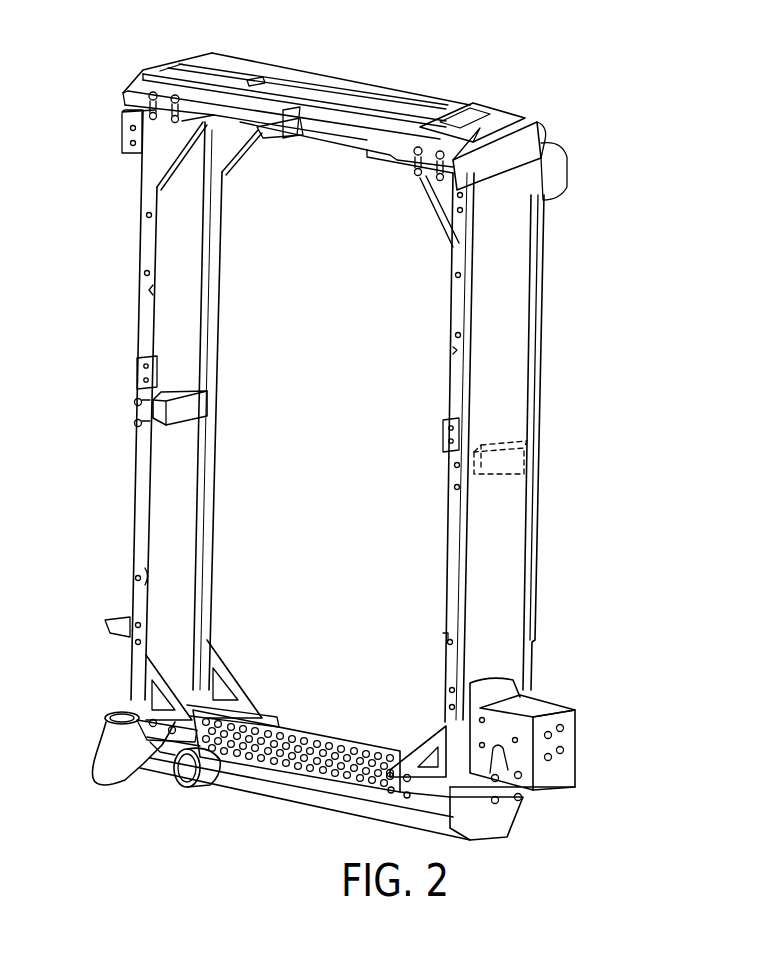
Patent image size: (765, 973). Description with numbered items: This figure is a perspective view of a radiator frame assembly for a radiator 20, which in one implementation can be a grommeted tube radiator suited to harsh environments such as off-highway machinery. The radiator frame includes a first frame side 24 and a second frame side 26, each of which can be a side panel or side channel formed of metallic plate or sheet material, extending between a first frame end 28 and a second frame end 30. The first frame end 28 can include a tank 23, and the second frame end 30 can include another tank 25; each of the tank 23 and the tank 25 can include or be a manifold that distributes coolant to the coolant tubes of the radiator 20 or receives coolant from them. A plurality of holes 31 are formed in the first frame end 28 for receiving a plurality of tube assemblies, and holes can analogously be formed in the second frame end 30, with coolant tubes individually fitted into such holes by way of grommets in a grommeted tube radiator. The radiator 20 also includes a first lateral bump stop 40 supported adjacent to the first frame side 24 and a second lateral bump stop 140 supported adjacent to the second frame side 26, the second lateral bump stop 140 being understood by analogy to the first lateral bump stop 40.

The radiator 20 is at (620, 193).
The tank 23 is at (315, 796).
The first frame side 24 is at (138, 337).
The tank 25 is at (396, 100).
The second frame side 26 is at (540, 336).
The first frame end 28 is at (224, 788).
The second frame end 30 is at (329, 75).
The holes 31 is at (296, 745).
The first lateral bump stop 40 is at (192, 396).
The second lateral bump stop 140 is at (514, 446).